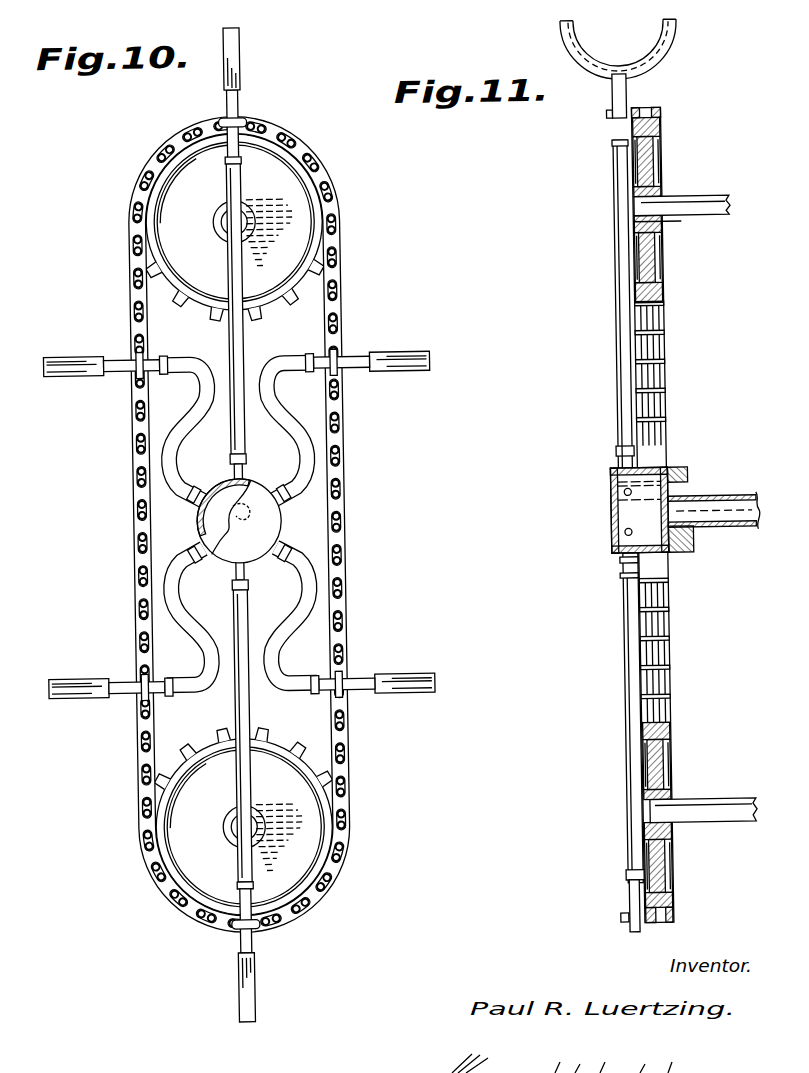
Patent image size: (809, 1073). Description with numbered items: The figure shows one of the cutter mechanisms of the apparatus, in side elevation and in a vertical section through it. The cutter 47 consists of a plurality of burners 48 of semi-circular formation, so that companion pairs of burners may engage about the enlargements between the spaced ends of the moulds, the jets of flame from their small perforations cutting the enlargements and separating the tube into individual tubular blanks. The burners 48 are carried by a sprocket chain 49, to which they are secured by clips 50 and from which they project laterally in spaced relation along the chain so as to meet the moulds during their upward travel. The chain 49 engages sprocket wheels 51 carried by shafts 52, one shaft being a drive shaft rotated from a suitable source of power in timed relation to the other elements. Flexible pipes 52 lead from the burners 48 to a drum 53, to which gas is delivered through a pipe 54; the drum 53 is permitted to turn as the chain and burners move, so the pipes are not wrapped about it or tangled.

In FIG. 10, the endless chain belt 47 is at (269, 523).
In FIG. 10, the burners 48 is at (239, 525).
In FIG. 11, the burners 48 is at (635, 487).
In FIG. 10, the sprocket chain 49 is at (212, 524).
In FIG. 11, the sprocket chain 49 is at (679, 514).
In FIG. 10, the clips 50 is at (239, 532).
In FIG. 11, the clips 50 is at (594, 516).
In FIG. 10, the sprocket wheels 51 is at (266, 524).
In FIG. 11, the sprocket wheels 51 is at (677, 514).
In FIG. 10, the shafts 52 is at (239, 521).
In FIG. 11, the shafts 52 is at (661, 511).
In FIG. 10, the drum 53 is at (256, 521).
In FIG. 11, the drum 53 is at (628, 510).
In FIG. 10, the pipe 54 is at (233, 520).
In FIG. 11, the pipe 54 is at (713, 493).